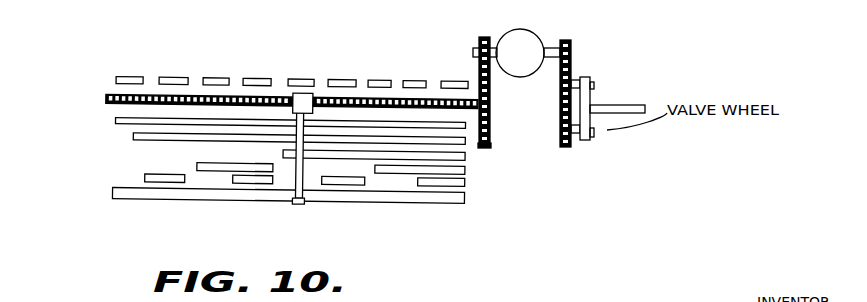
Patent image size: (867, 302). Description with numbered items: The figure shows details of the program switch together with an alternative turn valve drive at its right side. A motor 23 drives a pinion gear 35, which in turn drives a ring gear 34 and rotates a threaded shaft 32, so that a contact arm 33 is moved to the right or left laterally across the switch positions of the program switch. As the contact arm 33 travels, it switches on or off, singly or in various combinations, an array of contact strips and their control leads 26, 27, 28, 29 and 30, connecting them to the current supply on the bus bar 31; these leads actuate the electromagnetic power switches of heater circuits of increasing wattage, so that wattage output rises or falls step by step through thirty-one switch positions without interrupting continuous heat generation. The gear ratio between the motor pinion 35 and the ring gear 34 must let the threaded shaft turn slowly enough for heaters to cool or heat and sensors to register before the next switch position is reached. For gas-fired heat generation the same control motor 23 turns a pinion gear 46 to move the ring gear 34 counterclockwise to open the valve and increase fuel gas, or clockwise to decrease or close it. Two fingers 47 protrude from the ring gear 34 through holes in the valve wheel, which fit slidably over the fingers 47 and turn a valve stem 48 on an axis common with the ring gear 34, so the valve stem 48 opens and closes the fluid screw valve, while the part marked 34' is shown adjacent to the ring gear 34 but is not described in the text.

The motor 23 is at (545, 50).
The contact strip and control lead 26 is at (146, 176).
The contact strip and control lead 27 is at (196, 166).
The contact strip and control lead 28 is at (283, 153).
The contact strip and control lead 29 is at (133, 135).
The contact strip and control lead 30 is at (115, 119).
The bus bar 31 is at (465, 199).
The threaded shaft 32 is at (212, 96).
The contact arm 33 is at (304, 100).
The ring gear 34 is at (518, 92).
The rack foot 34' is at (498, 161).
The pinion gear 35 is at (468, 49).
The pinion gear 46 is at (572, 64).
The fingers 47 is at (594, 81).
The valve stem 48 is at (633, 105).